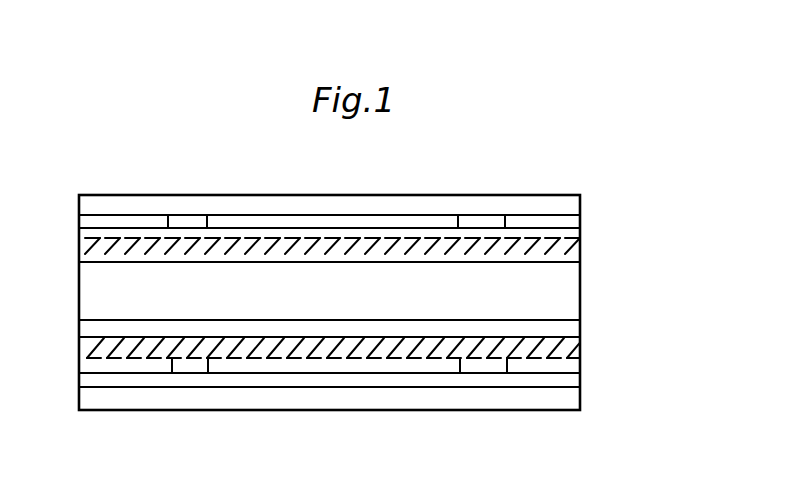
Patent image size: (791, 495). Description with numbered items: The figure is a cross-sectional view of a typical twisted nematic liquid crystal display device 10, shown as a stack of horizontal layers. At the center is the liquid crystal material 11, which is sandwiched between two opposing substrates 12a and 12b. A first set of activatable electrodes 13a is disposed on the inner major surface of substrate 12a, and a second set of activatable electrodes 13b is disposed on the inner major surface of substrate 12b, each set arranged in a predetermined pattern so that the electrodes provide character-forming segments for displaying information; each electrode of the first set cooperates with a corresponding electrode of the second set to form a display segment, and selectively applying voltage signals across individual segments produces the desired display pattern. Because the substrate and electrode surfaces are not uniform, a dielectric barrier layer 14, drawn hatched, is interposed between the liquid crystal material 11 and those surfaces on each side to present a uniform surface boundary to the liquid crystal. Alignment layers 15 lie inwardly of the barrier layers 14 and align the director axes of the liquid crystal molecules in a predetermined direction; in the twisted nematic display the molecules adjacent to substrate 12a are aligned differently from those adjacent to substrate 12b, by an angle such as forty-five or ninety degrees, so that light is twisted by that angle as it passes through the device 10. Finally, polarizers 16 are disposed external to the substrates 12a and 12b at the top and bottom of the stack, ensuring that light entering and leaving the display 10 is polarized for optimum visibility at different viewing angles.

The liquid crystal display device 10 is at (560, 127).
The liquid crystal material 11 is at (572, 292).
The substrate 12a is at (572, 221).
The substrate 12b is at (573, 380).
The first set of activatable electrodes 13a is at (187, 233).
The second set of activatable electrodes 13b is at (190, 367).
The dielectric barrier layer 14 is at (85, 247).
The alignment layers 15 is at (82, 327).
The polarizers 16 is at (107, 201).